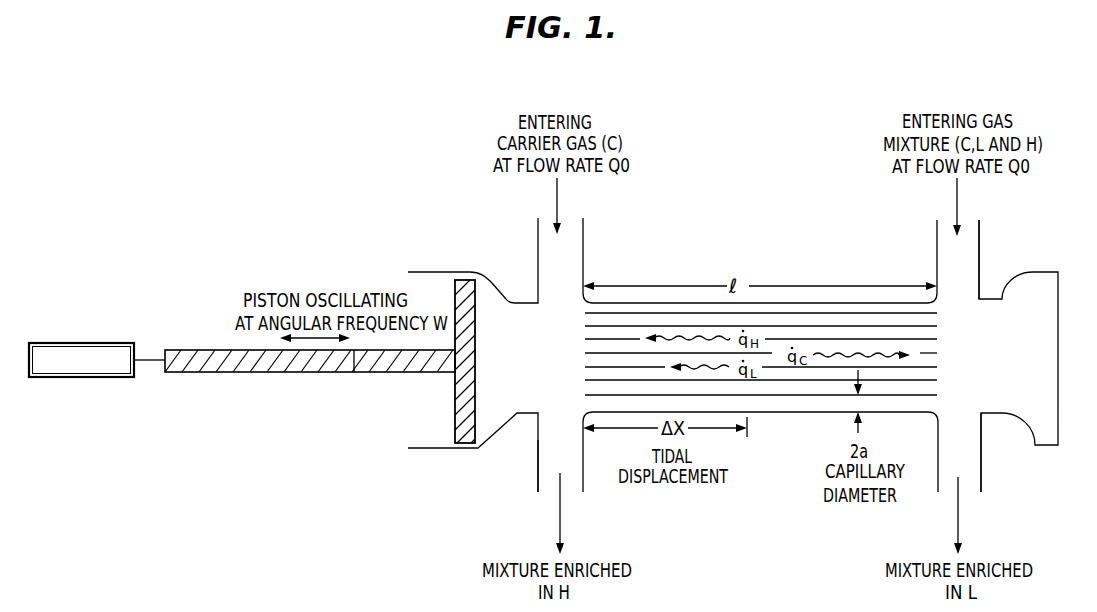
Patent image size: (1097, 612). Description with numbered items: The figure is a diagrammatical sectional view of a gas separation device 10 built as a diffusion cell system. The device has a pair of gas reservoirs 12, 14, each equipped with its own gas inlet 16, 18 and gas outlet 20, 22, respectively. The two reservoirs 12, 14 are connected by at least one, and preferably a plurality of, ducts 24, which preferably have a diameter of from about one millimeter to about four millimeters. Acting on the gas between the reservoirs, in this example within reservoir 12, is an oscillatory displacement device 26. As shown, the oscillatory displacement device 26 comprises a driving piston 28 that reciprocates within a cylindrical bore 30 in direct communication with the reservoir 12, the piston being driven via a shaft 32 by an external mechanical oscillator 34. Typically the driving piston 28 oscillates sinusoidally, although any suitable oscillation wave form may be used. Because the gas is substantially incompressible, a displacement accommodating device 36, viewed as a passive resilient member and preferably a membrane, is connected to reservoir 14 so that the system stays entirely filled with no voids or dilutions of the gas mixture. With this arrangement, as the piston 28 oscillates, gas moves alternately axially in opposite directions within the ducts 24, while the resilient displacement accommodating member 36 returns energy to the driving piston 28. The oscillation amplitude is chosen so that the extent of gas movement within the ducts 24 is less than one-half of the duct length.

The gas separation device 10 is at (763, 140).
The gas reservoir 12 is at (500, 312).
The gas reservoir 14 is at (1002, 313).
The gas inlet 16 is at (585, 264).
The gas inlet 18 is at (937, 253).
The gas outlet 20 is at (537, 470).
The gas outlet 22 is at (982, 465).
The ducts 24 is at (822, 313).
The oscillatory displacement device 26 is at (365, 186).
The driving piston 28 is at (466, 280).
The cylindrical bore 30 is at (440, 447).
The shaft 32 is at (337, 376).
The external mechanical oscillator 34 is at (115, 343).
The displacement accommodating device 36 is at (1060, 306).